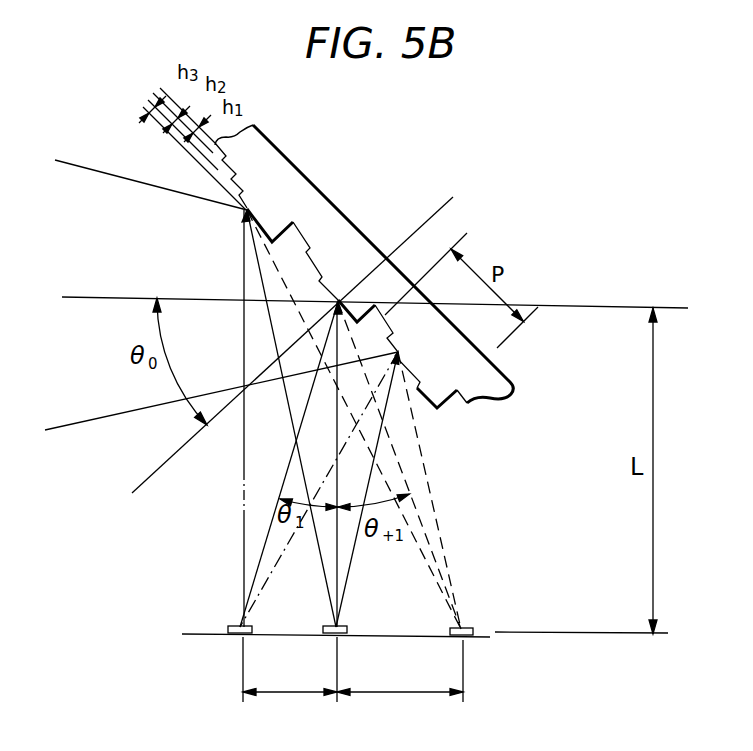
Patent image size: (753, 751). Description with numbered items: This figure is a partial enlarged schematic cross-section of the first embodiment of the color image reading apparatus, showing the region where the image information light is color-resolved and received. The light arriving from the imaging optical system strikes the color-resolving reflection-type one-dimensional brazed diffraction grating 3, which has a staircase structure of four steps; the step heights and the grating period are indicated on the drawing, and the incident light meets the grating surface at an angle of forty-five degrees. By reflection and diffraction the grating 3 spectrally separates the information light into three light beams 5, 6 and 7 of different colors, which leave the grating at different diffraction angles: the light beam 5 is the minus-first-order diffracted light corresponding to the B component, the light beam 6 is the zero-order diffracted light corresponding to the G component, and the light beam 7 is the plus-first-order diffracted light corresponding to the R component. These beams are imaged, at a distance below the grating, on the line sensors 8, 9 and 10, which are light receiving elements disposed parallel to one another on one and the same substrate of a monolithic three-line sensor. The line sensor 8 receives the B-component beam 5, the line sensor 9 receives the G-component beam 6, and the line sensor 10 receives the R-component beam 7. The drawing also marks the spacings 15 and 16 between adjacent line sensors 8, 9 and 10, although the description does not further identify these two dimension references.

The one-dimensional brazed diffraction grating 3 is at (270, 154).
The light beam 5 is at (252, 548).
The light beam 6 is at (345, 560).
The light beam 7 is at (440, 555).
The line sensor 8 is at (236, 637).
The line sensor 9 is at (340, 638).
The line sensor 10 is at (467, 640).
The detector spacing 15 is at (290, 679).
The detector spacing 16 is at (400, 679).